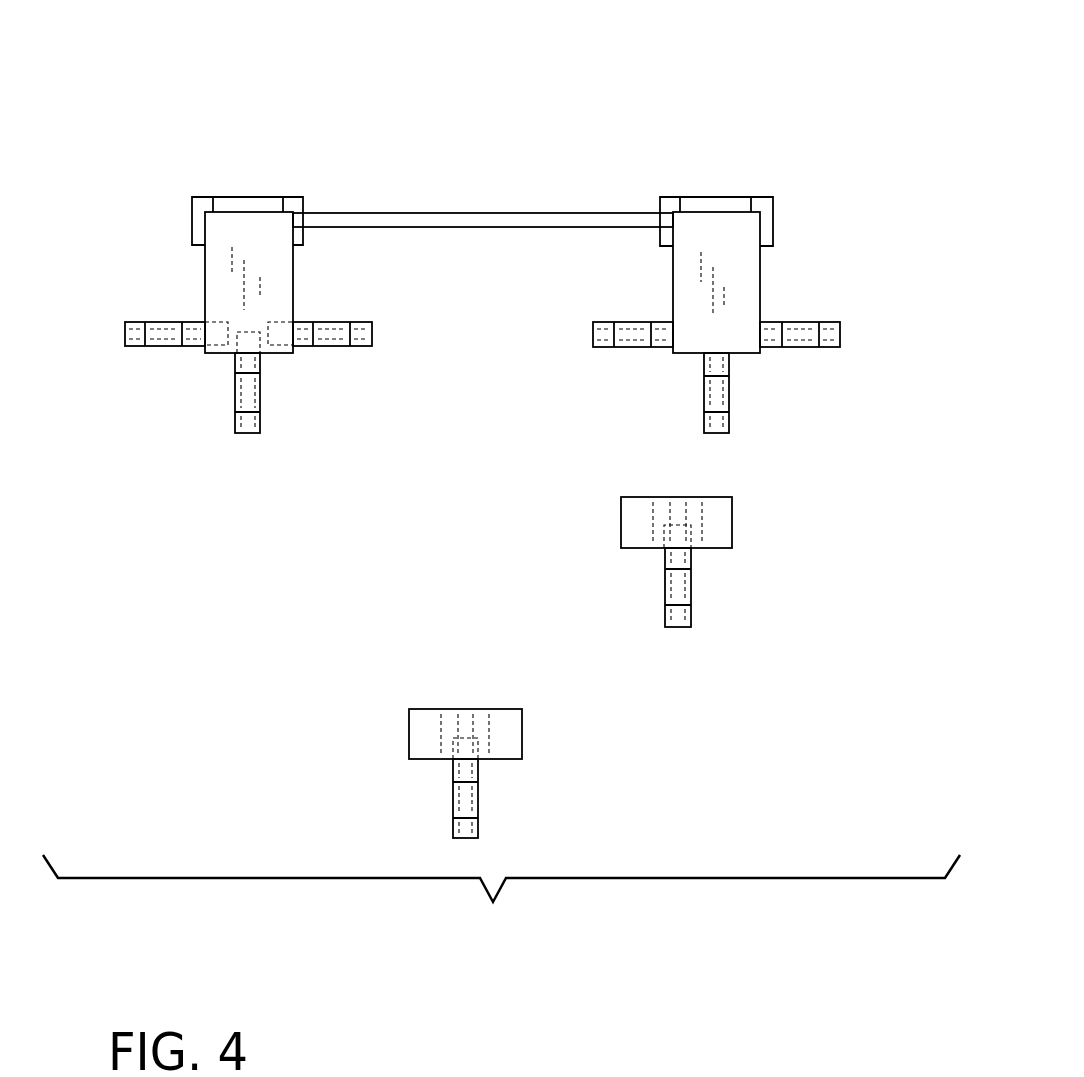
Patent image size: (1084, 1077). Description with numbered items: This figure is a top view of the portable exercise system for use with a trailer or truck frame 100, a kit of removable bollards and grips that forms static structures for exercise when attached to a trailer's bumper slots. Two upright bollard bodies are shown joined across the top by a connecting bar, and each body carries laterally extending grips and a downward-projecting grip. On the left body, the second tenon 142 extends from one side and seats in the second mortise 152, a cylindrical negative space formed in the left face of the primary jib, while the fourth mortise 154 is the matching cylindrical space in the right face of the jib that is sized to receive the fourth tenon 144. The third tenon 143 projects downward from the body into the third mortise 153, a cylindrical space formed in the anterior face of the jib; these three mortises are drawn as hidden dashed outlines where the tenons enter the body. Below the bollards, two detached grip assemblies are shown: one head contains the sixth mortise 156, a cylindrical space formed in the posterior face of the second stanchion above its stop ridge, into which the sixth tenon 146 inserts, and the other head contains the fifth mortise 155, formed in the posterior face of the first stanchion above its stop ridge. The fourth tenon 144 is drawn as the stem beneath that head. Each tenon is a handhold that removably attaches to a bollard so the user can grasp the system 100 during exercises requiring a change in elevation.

The portable exercise system for use with a trailer or truck frame 100 is at (122, 113).
The second tenon 142 is at (167, 348).
The third tenon 143 is at (260, 425).
The fourth tenon 144 is at (475, 805).
The sixth tenon 146 is at (686, 597).
The second mortise 152 is at (213, 323).
The third mortise 153 is at (249, 332).
The fourth mortise 154 is at (277, 322).
The fifth mortise 155 is at (477, 746).
The sixth mortise 156 is at (692, 532).